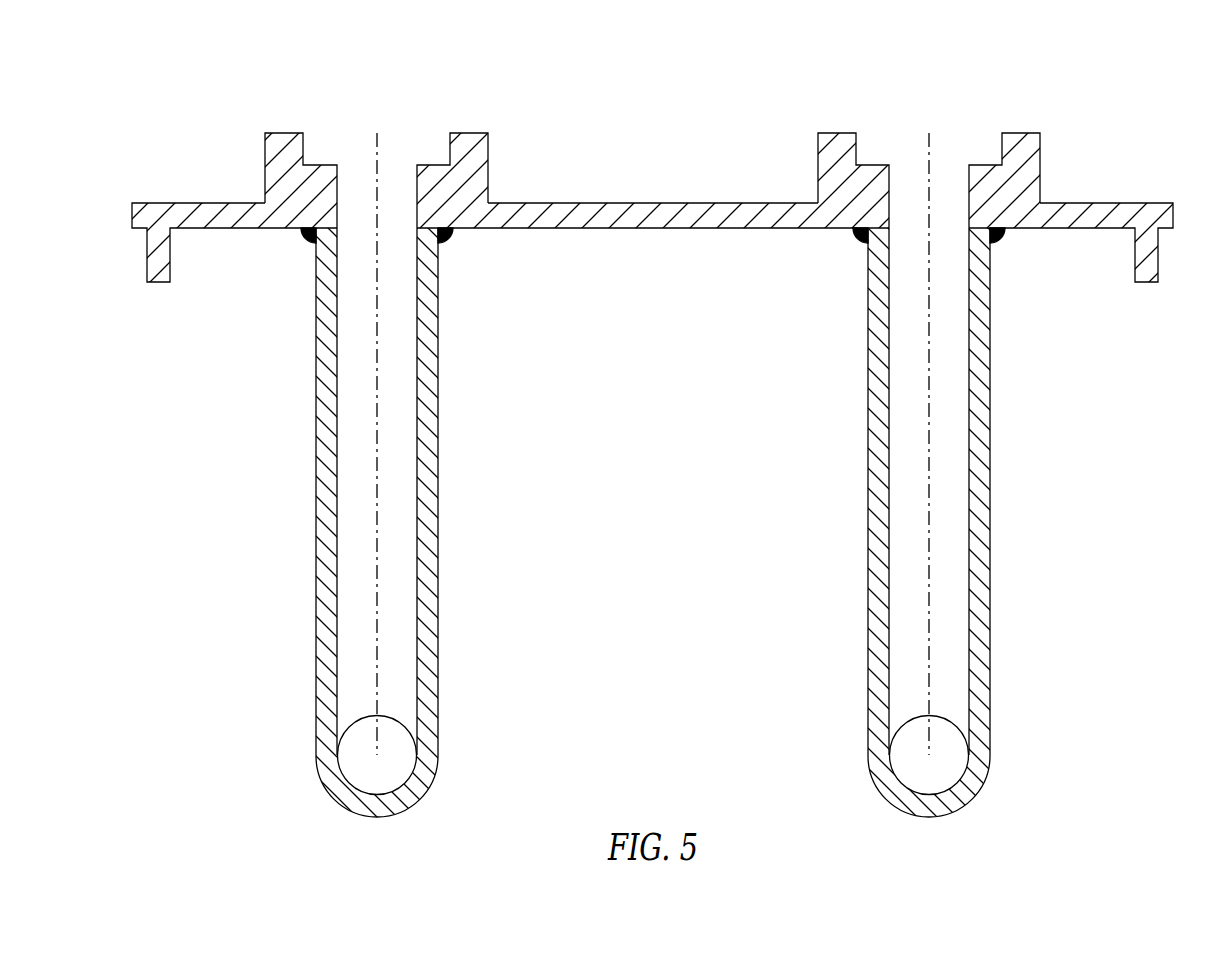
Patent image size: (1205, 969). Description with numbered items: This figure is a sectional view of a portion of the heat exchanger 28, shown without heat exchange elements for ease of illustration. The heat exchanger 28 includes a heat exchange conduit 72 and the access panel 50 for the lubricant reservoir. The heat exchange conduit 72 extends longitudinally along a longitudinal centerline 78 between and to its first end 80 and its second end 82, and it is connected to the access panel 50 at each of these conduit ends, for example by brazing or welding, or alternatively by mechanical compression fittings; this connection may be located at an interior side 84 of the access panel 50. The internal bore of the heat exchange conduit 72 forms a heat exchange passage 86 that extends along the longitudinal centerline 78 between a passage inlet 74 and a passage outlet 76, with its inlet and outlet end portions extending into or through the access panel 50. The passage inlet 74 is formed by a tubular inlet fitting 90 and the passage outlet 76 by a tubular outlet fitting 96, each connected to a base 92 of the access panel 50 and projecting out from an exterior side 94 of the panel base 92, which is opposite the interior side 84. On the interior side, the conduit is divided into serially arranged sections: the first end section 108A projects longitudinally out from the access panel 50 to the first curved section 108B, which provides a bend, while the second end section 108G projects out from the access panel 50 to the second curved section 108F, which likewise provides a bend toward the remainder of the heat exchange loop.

The access panel 50 is at (652, 423).
The heat exchanger 28 is at (673, 475).
The heat exchange conduit 72 is at (652, 475).
The heat exchange passage inlet 74 is at (392, 128).
The inlet fitting 90 is at (455, 121).
The heat exchange passage outlet 76 is at (942, 129).
The outlet fitting 96 is at (998, 122).
The longitudinal centerline 78 is at (377, 445).
The first end 80 is at (323, 226).
The second end 82 is at (876, 230).
The interior side 84 is at (625, 228).
The base 92 is at (652, 166).
The exterior side 94 is at (625, 203).
The heat exchange passage 86 is at (393, 637).
The first end section 108A is at (316, 415).
The first curved section 108B is at (316, 774).
The second curved section 108F is at (990, 774).
The second end section 108G is at (990, 467).